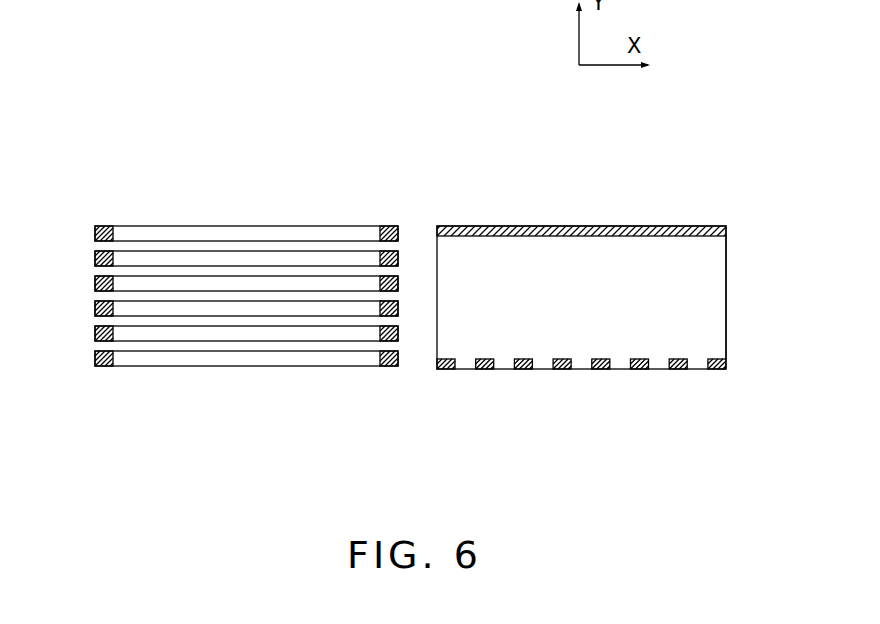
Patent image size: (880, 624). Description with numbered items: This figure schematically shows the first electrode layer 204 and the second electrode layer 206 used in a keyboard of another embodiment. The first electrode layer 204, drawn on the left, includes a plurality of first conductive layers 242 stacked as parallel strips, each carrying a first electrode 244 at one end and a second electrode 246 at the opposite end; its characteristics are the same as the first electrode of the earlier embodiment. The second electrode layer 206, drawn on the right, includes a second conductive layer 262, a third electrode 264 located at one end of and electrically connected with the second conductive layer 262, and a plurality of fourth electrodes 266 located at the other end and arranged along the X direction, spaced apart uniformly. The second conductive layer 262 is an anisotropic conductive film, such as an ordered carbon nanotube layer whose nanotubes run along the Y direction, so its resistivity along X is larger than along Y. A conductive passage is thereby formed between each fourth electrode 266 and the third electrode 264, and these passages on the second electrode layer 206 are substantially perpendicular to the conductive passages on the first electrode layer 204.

The first electrode layer 204 is at (237, 163).
The first conductive layer 242 is at (253, 226).
The first electrode 244 is at (101, 231).
The second electrode 246 is at (387, 226).
The second electrode layer 206 is at (584, 198).
The third electrode 264 is at (662, 230).
The second conductive layer 262 is at (727, 311).
The fourth electrode 266 is at (645, 371).